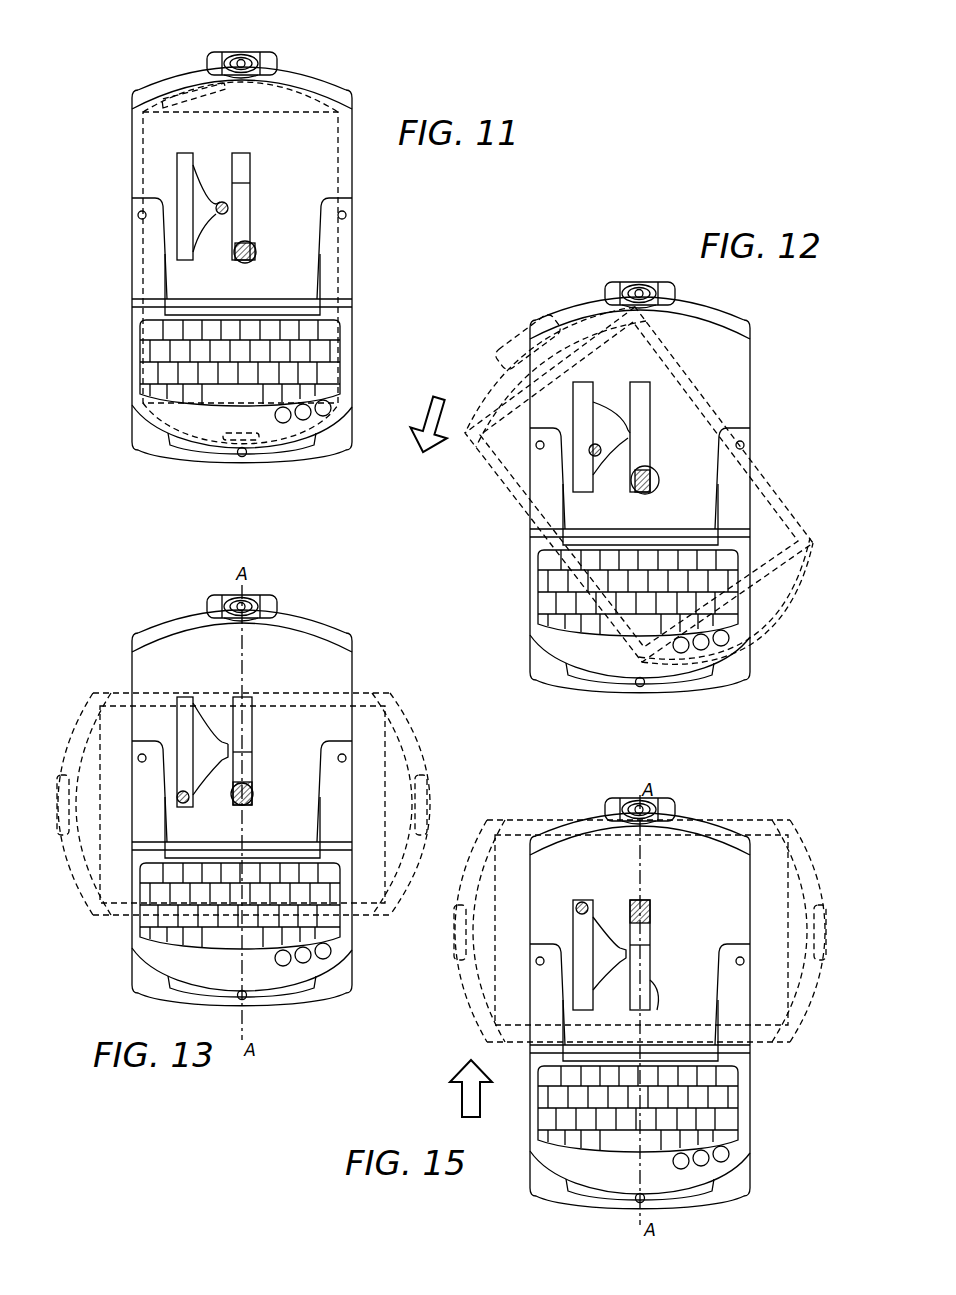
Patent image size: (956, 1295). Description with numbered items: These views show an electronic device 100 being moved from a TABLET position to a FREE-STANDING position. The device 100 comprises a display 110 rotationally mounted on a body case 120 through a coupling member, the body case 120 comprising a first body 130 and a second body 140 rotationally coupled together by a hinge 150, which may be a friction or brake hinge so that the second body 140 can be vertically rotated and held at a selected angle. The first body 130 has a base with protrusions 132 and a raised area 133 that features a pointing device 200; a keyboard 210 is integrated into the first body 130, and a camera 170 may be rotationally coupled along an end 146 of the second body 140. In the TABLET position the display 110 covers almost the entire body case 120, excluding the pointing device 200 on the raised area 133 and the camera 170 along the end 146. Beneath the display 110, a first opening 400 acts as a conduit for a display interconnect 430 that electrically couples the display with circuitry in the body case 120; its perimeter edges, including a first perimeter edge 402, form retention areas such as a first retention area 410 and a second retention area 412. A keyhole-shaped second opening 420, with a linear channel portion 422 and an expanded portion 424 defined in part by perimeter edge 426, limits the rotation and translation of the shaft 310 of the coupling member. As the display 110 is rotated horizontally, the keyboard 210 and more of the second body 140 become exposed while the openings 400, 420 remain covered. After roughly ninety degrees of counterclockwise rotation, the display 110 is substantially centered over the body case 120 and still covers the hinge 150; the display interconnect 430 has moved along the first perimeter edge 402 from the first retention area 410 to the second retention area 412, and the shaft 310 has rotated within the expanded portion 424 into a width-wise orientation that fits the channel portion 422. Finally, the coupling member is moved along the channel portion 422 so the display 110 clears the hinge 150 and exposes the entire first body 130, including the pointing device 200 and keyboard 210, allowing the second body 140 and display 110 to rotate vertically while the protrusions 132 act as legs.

In FIG. 11, the electronic device 100 is at (230, 200).
In FIG. 12, the electronic device 100 is at (671, 506).
In FIG. 13, the electronic device 100 is at (265, 804).
In FIG. 15, the electronic device 100 is at (677, 1022).
In FIG. 11, the display 110 is at (209, 422).
In FIG. 12, the display 110 is at (679, 591).
In FIG. 13, the display 110 is at (200, 818).
In FIG. 15, the display 110 is at (687, 992).
In FIG. 11, the body case 120 is at (253, 232).
In FIG. 12, the body case 120 is at (639, 485).
In FIG. 13, the body case 120 is at (243, 856).
In FIG. 15, the body case 120 is at (640, 931).
In FIG. 11, the first body 130 is at (334, 395).
In FIG. 12, the first body 130 is at (742, 645).
In FIG. 15, the first body 130 is at (613, 1127).
In FIG. 15, the protrusions 132 is at (641, 975).
In FIG. 11, the raised area 133 is at (117, 440).
In FIG. 12, the raised area 133 is at (513, 675).
In FIG. 15, the raised area 133 is at (522, 1195).
In FIG. 11, the second body 140 is at (242, 78).
In FIG. 12, the second body 140 is at (671, 317).
In FIG. 13, the second body 140 is at (225, 628).
In FIG. 15, the second body 140 is at (657, 822).
In FIG. 11, the end 146 is at (258, 78).
In FIG. 13, the hinge 150 is at (296, 796).
In FIG. 15, the hinge 150 is at (675, 1064).
In FIG. 11, the camera 170 is at (202, 44).
In FIG. 11, the pointing device 200 is at (264, 463).
In FIG. 15, the pointing device 200 is at (625, 1202).
In FIG. 11, the keyboard 210 is at (240, 363).
In FIG. 12, the keyboard 210 is at (603, 591).
In FIG. 13, the keyboard 210 is at (270, 931).
In FIG. 15, the keyboard 210 is at (667, 1142).
In FIG. 11, the shaft 310 is at (273, 260).
In FIG. 13, the shaft 310 is at (267, 800).
In FIG. 15, the shaft 310 is at (673, 901).
In FIG. 11, the first opening 400 is at (147, 158).
In FIG. 12, the first opening 400 is at (624, 414).
In FIG. 13, the first opening 400 is at (201, 729).
In FIG. 15, the first opening 400 is at (601, 953).
In FIG. 11, the first perimeter edge 402 is at (215, 256).
In FIG. 13, the first perimeter edge 402 is at (212, 780).
In FIG. 11, the first retention area 410 is at (213, 162).
In FIG. 13, the first retention area 410 is at (218, 709).
In FIG. 11, the second retention area 412 is at (136, 223).
In FIG. 13, the second retention area 412 is at (166, 752).
In FIG. 11, the second opening 420 is at (273, 190).
In FIG. 12, the second opening 420 is at (670, 444).
In FIG. 13, the second opening 420 is at (284, 751).
In FIG. 15, the second opening 420 is at (673, 960).
In FIG. 11, the linear channel portion 422 is at (278, 169).
In FIG. 13, the linear channel portion 422 is at (277, 755).
In FIG. 15, the linear channel portion 422 is at (678, 931).
In FIG. 13, the expanded portion 424 is at (276, 786).
In FIG. 11, the perimeter edge 426 is at (279, 232).
In FIG. 11, the display interconnect 430 is at (153, 203).
In FIG. 13, the display interconnect 430 is at (204, 810).
In FIG. 15, the display interconnect 430 is at (568, 888).